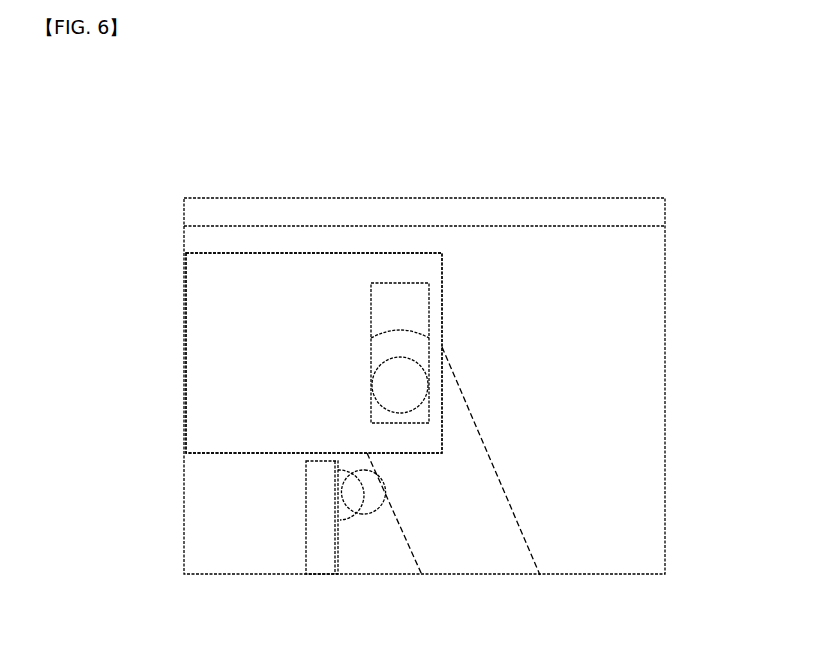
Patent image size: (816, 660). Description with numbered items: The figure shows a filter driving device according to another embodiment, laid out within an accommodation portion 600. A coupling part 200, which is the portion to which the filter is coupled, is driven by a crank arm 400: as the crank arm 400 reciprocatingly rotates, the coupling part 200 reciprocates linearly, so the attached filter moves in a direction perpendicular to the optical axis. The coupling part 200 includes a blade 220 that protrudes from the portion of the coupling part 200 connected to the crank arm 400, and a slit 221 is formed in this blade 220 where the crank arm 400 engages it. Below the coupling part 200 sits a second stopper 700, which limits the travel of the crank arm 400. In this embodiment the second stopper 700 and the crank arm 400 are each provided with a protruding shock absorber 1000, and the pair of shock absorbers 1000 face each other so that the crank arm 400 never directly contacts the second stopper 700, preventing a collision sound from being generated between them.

The accommodation portion 600 is at (172, 145).
The coupling part 200 is at (295, 136).
The blade 220 is at (308, 270).
The slit 221 is at (409, 303).
The crank arm 400 is at (458, 485).
The second stopper 700 is at (321, 561).
The shock absorber 1000 is at (342, 512).